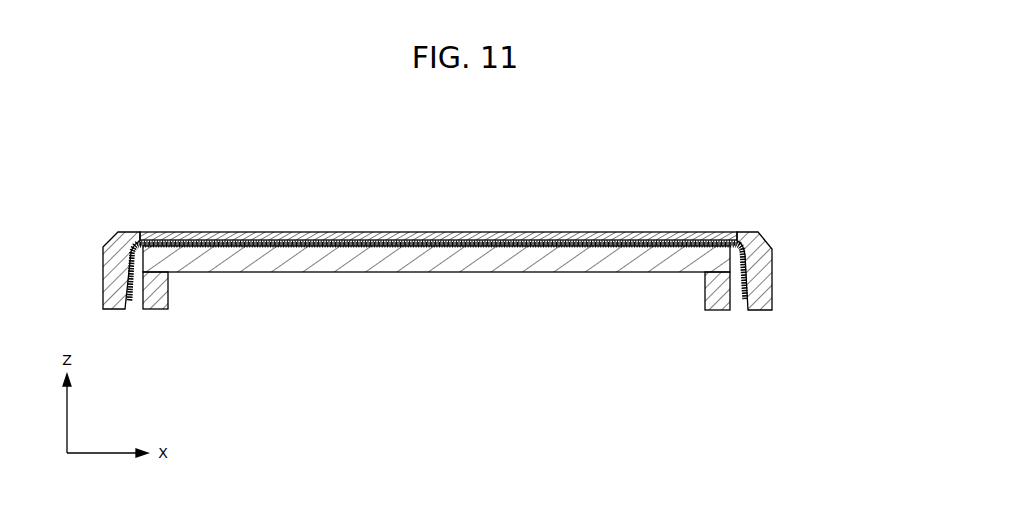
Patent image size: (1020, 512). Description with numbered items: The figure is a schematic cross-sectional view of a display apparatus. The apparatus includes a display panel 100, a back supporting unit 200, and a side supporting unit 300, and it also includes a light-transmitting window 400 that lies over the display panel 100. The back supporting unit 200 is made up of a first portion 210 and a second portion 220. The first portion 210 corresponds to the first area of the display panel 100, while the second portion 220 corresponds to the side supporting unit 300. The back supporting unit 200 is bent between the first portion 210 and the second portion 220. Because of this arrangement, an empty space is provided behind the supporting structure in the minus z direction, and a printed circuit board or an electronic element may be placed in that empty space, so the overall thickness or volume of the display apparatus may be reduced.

The display panel 100 is at (760, 244).
The back supporting unit 200 is at (436, 330).
The first portion 210 is at (440, 266).
The second portion 220 is at (588, 374).
The side supporting unit 300 is at (772, 265).
The light-transmitting window 400 is at (712, 232).